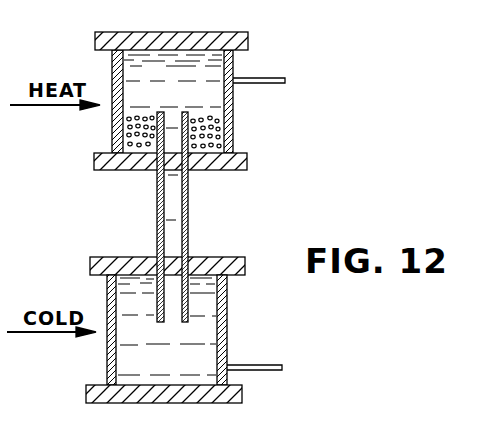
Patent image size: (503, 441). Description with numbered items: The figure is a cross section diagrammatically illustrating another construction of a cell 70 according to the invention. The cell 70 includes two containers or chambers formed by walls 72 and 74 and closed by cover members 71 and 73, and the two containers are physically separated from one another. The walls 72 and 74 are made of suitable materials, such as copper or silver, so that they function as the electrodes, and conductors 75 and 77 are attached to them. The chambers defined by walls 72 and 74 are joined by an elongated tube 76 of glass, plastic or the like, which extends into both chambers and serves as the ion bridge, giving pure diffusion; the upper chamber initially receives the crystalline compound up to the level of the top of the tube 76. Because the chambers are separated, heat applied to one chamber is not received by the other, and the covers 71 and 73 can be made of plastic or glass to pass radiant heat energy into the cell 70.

The cell 70 is at (279, 168).
The cover member 71 is at (175, 37).
The wall 72 is at (233, 117).
The cover member 73 is at (125, 393).
The wall 74 is at (227, 305).
The conductor 75 is at (263, 80).
The elongated tube 76 is at (187, 213).
The conductor 77 is at (282, 363).